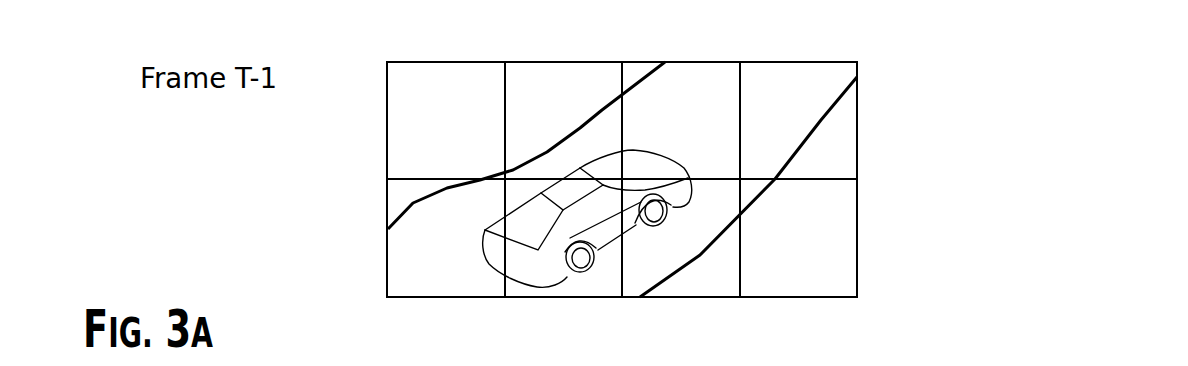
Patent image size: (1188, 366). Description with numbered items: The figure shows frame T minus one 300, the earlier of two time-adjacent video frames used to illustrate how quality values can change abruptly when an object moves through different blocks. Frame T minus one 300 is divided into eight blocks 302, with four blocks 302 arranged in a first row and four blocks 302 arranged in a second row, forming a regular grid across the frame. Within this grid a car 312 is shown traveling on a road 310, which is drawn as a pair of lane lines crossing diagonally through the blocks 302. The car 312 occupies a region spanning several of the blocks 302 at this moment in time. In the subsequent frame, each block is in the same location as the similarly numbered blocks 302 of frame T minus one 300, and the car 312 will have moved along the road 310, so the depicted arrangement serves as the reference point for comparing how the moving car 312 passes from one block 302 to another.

The frame T-1 300 is at (1040, 125).
The blocks 302 is at (793, 322).
The road 310 is at (818, 130).
The car 312 is at (637, 237).